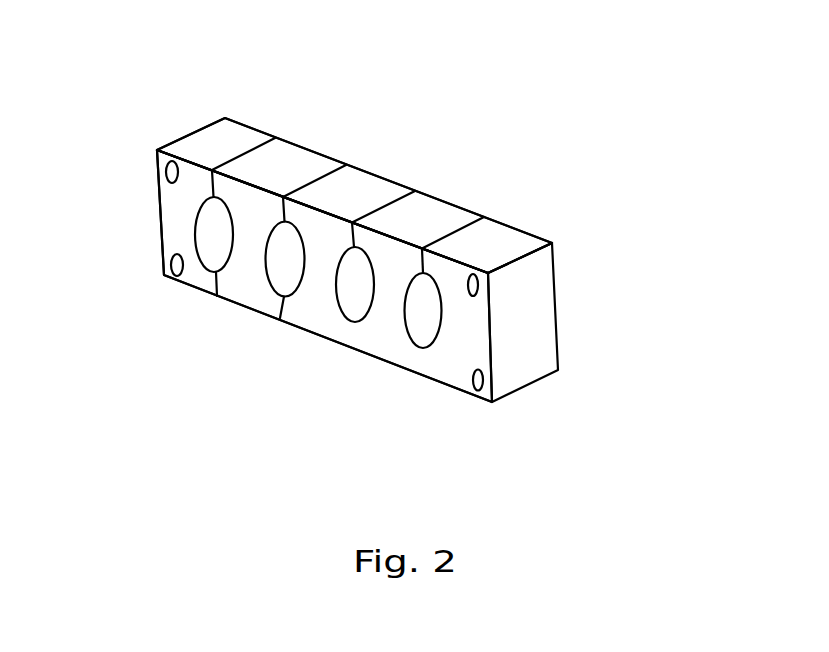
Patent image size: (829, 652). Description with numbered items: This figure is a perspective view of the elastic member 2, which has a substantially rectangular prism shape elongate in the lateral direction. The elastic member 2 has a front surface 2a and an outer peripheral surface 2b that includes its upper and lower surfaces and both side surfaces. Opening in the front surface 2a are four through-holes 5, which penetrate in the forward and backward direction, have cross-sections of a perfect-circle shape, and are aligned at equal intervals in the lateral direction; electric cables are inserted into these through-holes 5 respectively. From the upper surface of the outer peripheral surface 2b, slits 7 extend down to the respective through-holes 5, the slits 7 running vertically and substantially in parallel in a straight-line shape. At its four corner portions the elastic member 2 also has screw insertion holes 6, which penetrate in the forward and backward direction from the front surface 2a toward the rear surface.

The elastic member 2 is at (563, 273).
The front surface 2a is at (428, 366).
The outer peripheral surface 2b is at (208, 138).
The through-holes 5 is at (413, 347).
The screw insertion holes 6 is at (172, 265).
The slits 7 is at (458, 230).